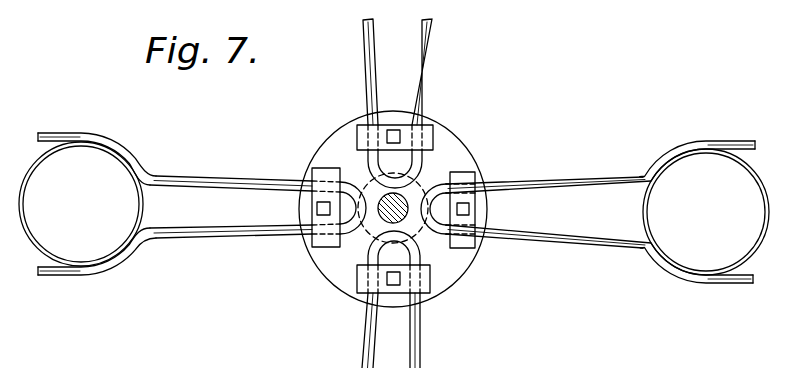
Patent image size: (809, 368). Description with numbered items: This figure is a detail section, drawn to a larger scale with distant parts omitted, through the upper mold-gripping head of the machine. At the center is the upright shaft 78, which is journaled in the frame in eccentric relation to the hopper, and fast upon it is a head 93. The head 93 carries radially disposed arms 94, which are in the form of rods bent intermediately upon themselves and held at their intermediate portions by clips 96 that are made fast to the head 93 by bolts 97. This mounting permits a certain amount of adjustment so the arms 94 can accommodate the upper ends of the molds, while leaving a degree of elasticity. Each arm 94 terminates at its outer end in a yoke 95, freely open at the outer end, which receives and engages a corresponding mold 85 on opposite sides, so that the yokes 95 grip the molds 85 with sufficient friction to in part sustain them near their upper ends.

The upright shaft 78 is at (410, 194).
The mold 85 is at (140, 218).
The head 93 is at (453, 286).
The arms 94 is at (419, 44).
The yoke 95 is at (80, 276).
The clips 96 is at (346, 145).
The bolts 97 is at (462, 204).